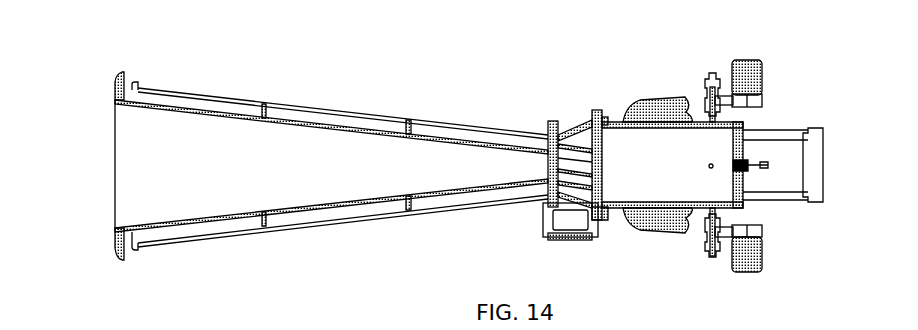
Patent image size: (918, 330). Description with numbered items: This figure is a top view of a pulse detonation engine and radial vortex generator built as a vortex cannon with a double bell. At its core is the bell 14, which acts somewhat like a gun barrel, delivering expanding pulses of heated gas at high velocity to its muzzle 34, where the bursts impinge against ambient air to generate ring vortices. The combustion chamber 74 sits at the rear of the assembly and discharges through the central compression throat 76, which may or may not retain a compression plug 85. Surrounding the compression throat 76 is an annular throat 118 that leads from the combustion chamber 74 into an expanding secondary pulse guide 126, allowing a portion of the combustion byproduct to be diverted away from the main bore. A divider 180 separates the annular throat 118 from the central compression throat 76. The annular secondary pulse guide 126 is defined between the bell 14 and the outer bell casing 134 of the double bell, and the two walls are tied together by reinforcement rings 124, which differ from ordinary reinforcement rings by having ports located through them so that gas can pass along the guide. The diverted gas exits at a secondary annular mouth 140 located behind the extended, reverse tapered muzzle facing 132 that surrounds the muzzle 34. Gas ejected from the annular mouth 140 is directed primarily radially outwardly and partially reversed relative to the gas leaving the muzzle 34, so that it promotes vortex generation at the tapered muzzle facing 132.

The bell 14 is at (263, 212).
The muzzle 34 is at (125, 216).
The combustion chamber 74 is at (666, 176).
The compression throat 76 is at (585, 149).
The compression plug 85 is at (548, 163).
The annular throat 118 is at (572, 138).
The reinforcement rings 124 is at (415, 120).
The secondary pulse guide 126 is at (285, 105).
The muzzle facing 132 is at (115, 92).
The outer bell casing 134 is at (328, 110).
The annular mouth 140 is at (343, 247).
The divider 180 is at (583, 146).